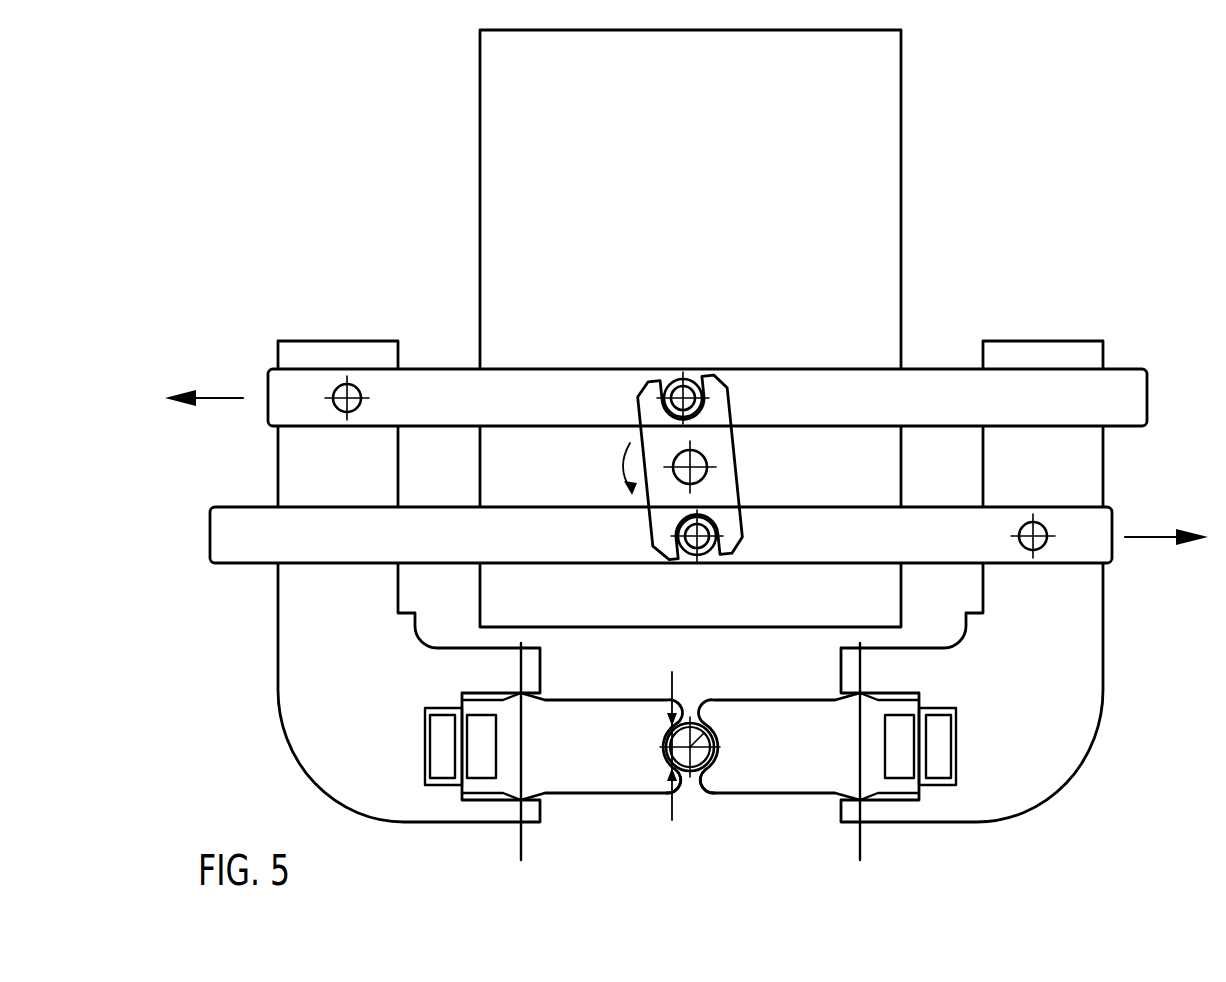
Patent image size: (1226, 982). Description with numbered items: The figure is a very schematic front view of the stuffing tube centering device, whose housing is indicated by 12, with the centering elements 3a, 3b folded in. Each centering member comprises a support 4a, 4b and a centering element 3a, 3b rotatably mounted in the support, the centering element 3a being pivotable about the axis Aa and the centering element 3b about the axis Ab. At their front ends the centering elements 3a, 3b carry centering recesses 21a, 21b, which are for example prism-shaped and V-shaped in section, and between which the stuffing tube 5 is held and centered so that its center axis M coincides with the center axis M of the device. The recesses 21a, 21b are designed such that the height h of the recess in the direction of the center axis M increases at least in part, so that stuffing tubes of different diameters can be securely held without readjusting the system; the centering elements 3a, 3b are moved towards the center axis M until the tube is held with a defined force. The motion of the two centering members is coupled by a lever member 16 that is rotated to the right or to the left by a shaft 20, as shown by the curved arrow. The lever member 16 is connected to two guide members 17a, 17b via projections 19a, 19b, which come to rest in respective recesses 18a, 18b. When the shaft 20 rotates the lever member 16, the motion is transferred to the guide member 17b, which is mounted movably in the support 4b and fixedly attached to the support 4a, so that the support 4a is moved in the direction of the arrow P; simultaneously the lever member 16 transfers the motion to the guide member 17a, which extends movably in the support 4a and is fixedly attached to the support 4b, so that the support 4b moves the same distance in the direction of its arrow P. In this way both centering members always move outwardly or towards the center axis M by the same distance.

The housing 12 is at (901, 68).
The support 4a is at (278, 668).
The support 4b is at (1103, 668).
The guide member 17a is at (210, 540).
The guide member 17b is at (1148, 397).
The lever member 16 is at (742, 462).
The recess 18a is at (714, 565).
The recess 18b is at (670, 378).
The projection 19a is at (684, 563).
The projection 19b is at (697, 372).
The shaft 20 is at (673, 468).
The axis Aa is at (523, 668).
The axis Ab is at (858, 668).
The centering element 3a is at (602, 700).
The centering element 3b is at (760, 698).
The stuffing tube 5 is at (689, 722).
The center axis M is at (713, 698).
The height of the recess h is at (667, 743).
The centering recess 21a is at (684, 776).
The centering recess 21b is at (701, 773).
The arrow P is at (686, 451).